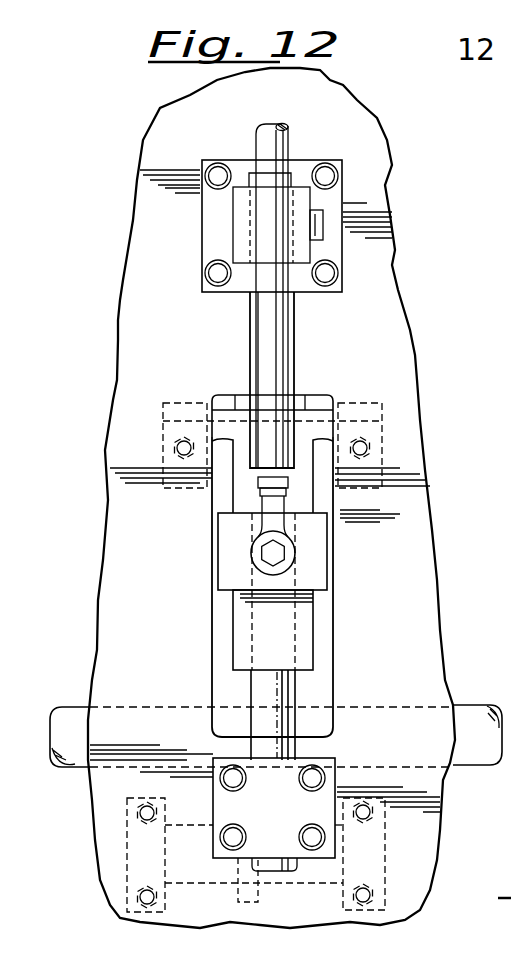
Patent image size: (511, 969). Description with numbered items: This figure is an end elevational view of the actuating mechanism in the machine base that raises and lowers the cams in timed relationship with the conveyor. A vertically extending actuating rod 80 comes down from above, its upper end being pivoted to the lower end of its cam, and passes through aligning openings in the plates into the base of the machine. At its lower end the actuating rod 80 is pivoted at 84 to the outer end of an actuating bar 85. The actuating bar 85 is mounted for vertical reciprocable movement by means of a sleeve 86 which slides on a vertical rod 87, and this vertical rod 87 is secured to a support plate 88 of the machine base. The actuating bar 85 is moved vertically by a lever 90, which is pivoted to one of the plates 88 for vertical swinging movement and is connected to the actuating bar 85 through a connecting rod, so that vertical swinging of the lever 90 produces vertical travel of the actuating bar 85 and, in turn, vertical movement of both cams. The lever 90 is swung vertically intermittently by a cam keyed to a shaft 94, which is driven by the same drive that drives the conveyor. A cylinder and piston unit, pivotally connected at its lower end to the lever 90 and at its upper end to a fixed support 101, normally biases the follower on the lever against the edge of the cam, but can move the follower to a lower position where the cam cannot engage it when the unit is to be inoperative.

The actuating rod 80 is at (276, 140).
The pivot 84 is at (273, 553).
The actuating bar 85 is at (322, 571).
The sleeve 86 is at (305, 637).
The vertical rod 87 is at (293, 330).
The support plate 88 is at (395, 369).
The lever 90 is at (255, 892).
The shaft 94 is at (475, 710).
The fixed support 101 is at (220, 400).